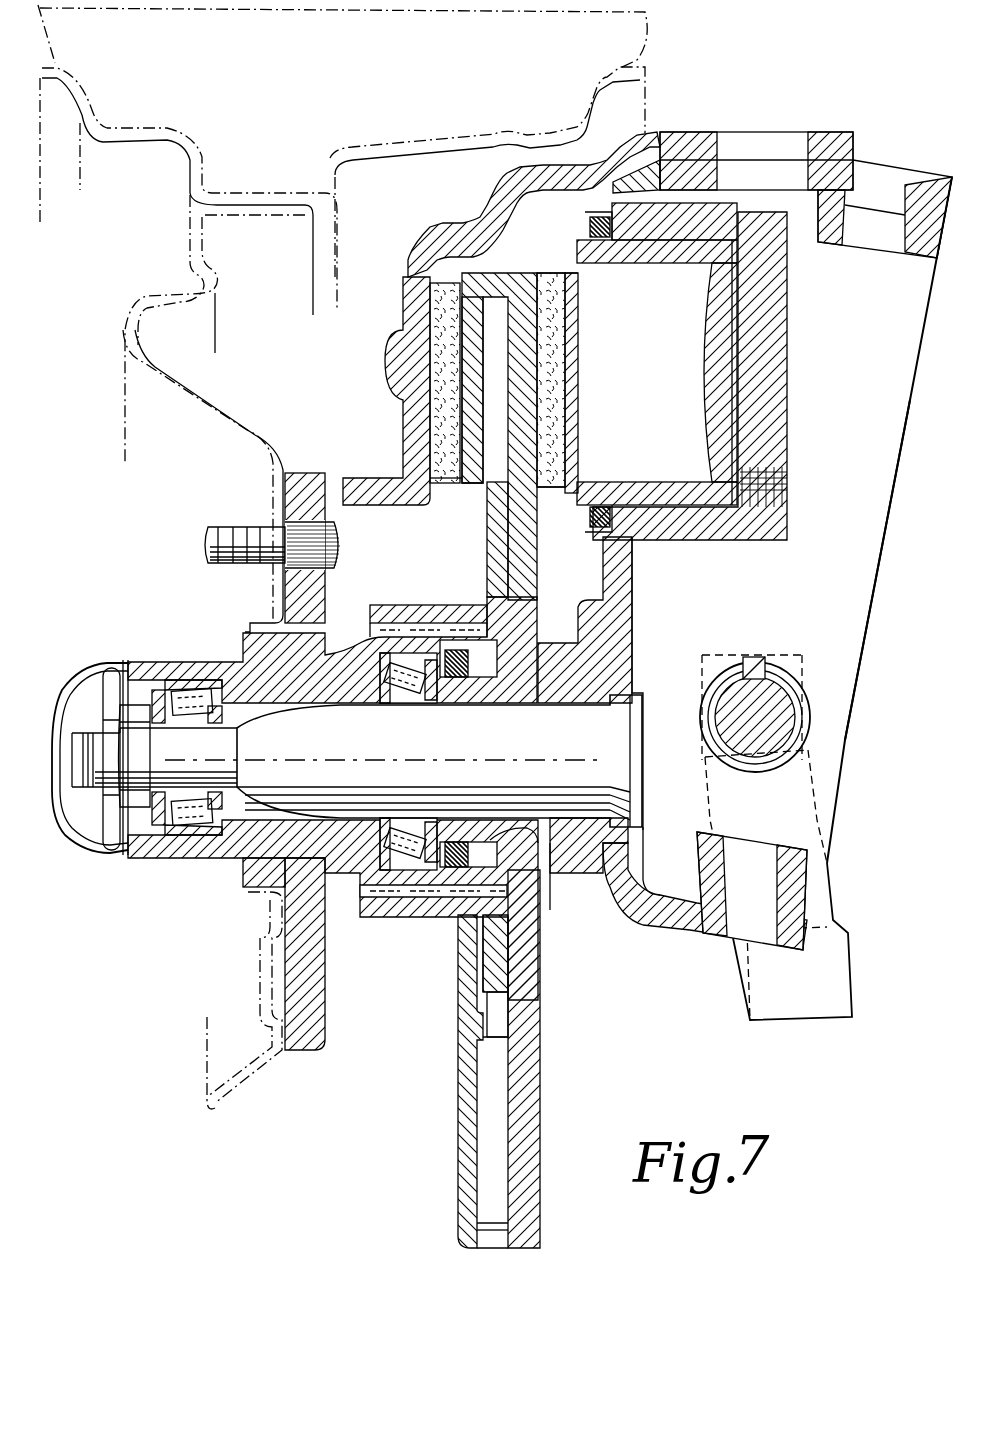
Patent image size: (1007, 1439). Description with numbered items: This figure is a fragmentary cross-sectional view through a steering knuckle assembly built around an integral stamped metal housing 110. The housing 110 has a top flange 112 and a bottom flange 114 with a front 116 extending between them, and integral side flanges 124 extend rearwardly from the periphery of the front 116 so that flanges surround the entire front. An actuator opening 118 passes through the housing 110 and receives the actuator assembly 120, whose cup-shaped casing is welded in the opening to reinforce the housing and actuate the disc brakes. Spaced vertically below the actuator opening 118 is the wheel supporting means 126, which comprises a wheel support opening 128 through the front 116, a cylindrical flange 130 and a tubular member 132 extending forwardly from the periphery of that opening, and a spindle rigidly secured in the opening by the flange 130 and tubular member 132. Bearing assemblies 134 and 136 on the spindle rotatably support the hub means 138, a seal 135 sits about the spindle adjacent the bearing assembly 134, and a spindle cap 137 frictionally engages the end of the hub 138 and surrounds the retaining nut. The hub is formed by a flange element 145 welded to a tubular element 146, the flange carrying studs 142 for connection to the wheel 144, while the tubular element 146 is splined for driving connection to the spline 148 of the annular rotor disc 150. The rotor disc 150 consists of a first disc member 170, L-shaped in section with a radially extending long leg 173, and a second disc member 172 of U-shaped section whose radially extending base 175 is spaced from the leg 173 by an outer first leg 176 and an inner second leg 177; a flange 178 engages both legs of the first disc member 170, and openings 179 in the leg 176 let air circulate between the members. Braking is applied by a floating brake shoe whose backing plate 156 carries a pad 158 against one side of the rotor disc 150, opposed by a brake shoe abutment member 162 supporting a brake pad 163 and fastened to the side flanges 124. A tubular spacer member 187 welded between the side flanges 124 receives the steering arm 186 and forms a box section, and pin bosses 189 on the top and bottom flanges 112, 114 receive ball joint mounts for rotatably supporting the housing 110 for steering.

The knuckle housing 110 is at (890, 545).
The top flange 112 is at (690, 165).
The bottom flange 114 is at (692, 918).
The front 116 is at (625, 580).
The actuator opening 118 is at (625, 535).
The actuator assembly 120 is at (787, 455).
The side flanges 124 is at (838, 632).
The wheel supporting means 126 is at (560, 883).
The wheel support opening 128 is at (632, 665).
The cylindrical flange 130 is at (565, 830).
The tubular member 132 is at (480, 830).
The bearing assembly 134 is at (405, 855).
The seal 135 is at (455, 848).
The bearing assembly 136 is at (200, 830).
The spindle cap 137 is at (55, 715).
The hub means 138 is at (338, 612).
The studs 142 is at (225, 530).
The wheel 144 is at (247, 430).
The flange element 145 is at (305, 480).
The tubular element 146 is at (350, 650).
The spline 148 is at (440, 635).
The rotor disc 150 is at (480, 650).
The floating backing plate 156 is at (580, 302).
The pad 158 is at (563, 335).
The brake shoe abutment member 162 is at (660, 135).
The brake pad 163 is at (435, 290).
The first disc member 170 is at (545, 433).
The second disc member 172 is at (455, 465).
The long leg 173 is at (525, 375).
The base 175 is at (462, 320).
The first leg 176 is at (497, 277).
The second leg 177 is at (495, 500).
The flange 178 is at (487, 950).
The openings 179 is at (493, 1237).
The steering arm 186 is at (850, 975).
The tubular spacer member 187 is at (800, 717).
The bosses 189 is at (790, 888).